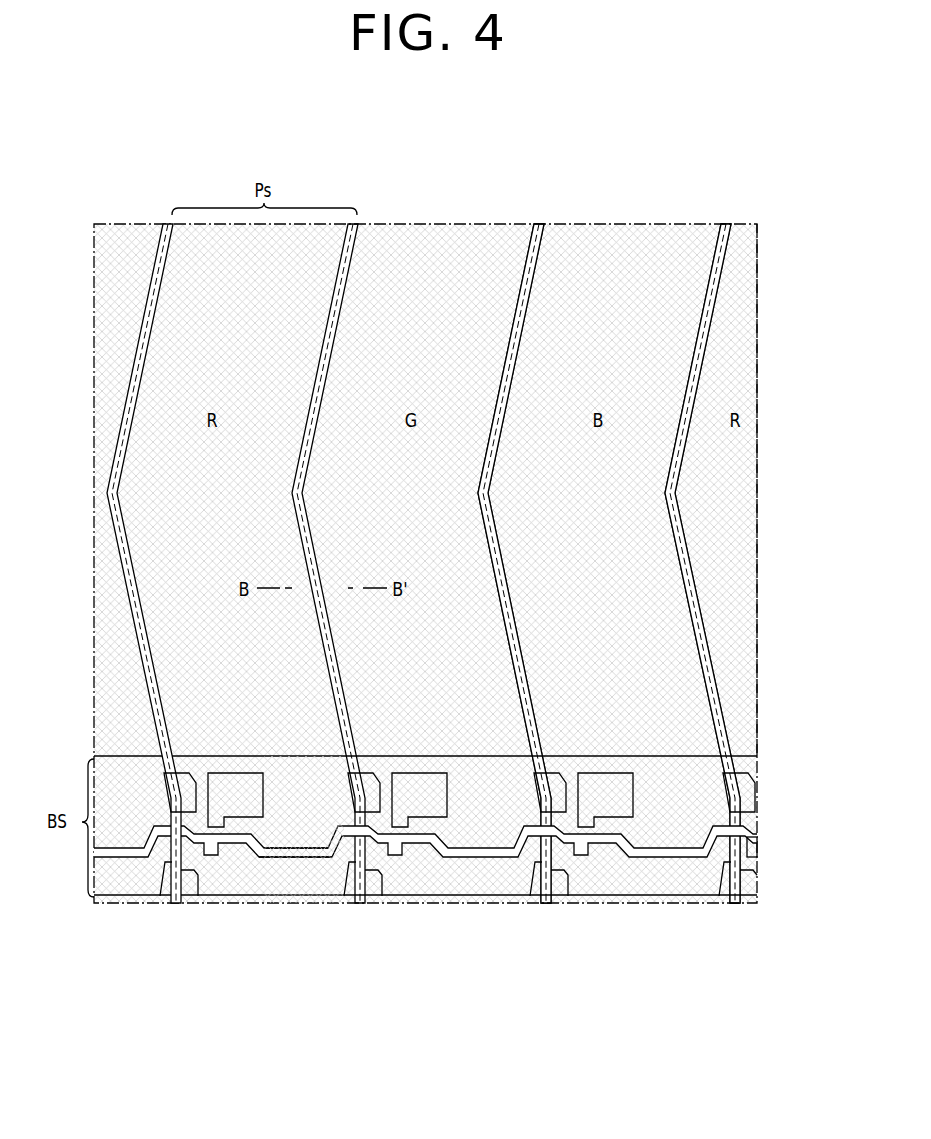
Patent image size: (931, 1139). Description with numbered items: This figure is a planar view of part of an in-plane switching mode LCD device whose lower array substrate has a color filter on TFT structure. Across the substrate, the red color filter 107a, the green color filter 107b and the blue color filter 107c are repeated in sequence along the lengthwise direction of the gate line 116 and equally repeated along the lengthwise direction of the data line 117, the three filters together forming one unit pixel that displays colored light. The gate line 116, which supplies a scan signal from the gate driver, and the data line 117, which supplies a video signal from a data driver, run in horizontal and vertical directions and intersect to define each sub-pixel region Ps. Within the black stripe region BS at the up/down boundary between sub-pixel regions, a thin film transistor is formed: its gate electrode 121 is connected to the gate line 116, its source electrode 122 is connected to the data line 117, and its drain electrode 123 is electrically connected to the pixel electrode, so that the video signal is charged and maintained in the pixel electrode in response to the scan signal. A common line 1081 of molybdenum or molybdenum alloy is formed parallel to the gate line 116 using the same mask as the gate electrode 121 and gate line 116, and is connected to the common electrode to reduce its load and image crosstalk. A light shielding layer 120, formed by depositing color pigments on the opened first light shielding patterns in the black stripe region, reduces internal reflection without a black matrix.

The red color filter 107a is at (745, 228).
The green color filter 107b is at (438, 228).
The blue color filter 107c is at (616, 228).
The data line 117 is at (135, 625).
The light shielding layer 120 is at (112, 853).
The gate electrode 121 is at (204, 872).
The source electrode 122 is at (197, 872).
The drain electrode 123 is at (250, 818).
The gate line 116 is at (295, 883).
The common line 1081 is at (323, 846).